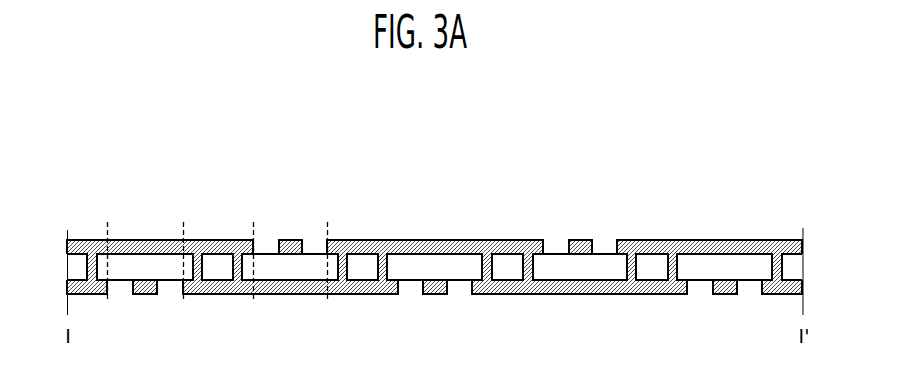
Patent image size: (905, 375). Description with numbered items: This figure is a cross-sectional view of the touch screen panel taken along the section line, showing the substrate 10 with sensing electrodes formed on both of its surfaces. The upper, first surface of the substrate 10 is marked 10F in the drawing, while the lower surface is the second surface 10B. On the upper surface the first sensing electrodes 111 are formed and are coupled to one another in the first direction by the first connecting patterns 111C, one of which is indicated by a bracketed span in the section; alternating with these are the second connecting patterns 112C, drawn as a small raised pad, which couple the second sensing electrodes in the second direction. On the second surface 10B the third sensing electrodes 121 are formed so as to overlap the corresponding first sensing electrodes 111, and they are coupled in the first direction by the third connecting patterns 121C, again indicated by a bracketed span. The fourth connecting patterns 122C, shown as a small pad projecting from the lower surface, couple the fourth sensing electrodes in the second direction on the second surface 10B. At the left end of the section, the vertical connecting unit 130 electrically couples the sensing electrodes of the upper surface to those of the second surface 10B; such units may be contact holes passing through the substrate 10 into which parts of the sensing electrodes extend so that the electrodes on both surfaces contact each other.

The substrate 10 is at (796, 268).
The front surface layer of substrate 10F is at (790, 243).
The second surface 10B is at (792, 292).
The vertical connecting unit 130 is at (88, 265).
The first sensing electrode 111 is at (213, 239).
The first connecting pattern 111C is at (183, 237).
The second connecting pattern 112C is at (290, 240).
The third sensing electrode 121 is at (213, 297).
The third connecting pattern 121C is at (327, 295).
The fourth connecting pattern 122C is at (142, 294).